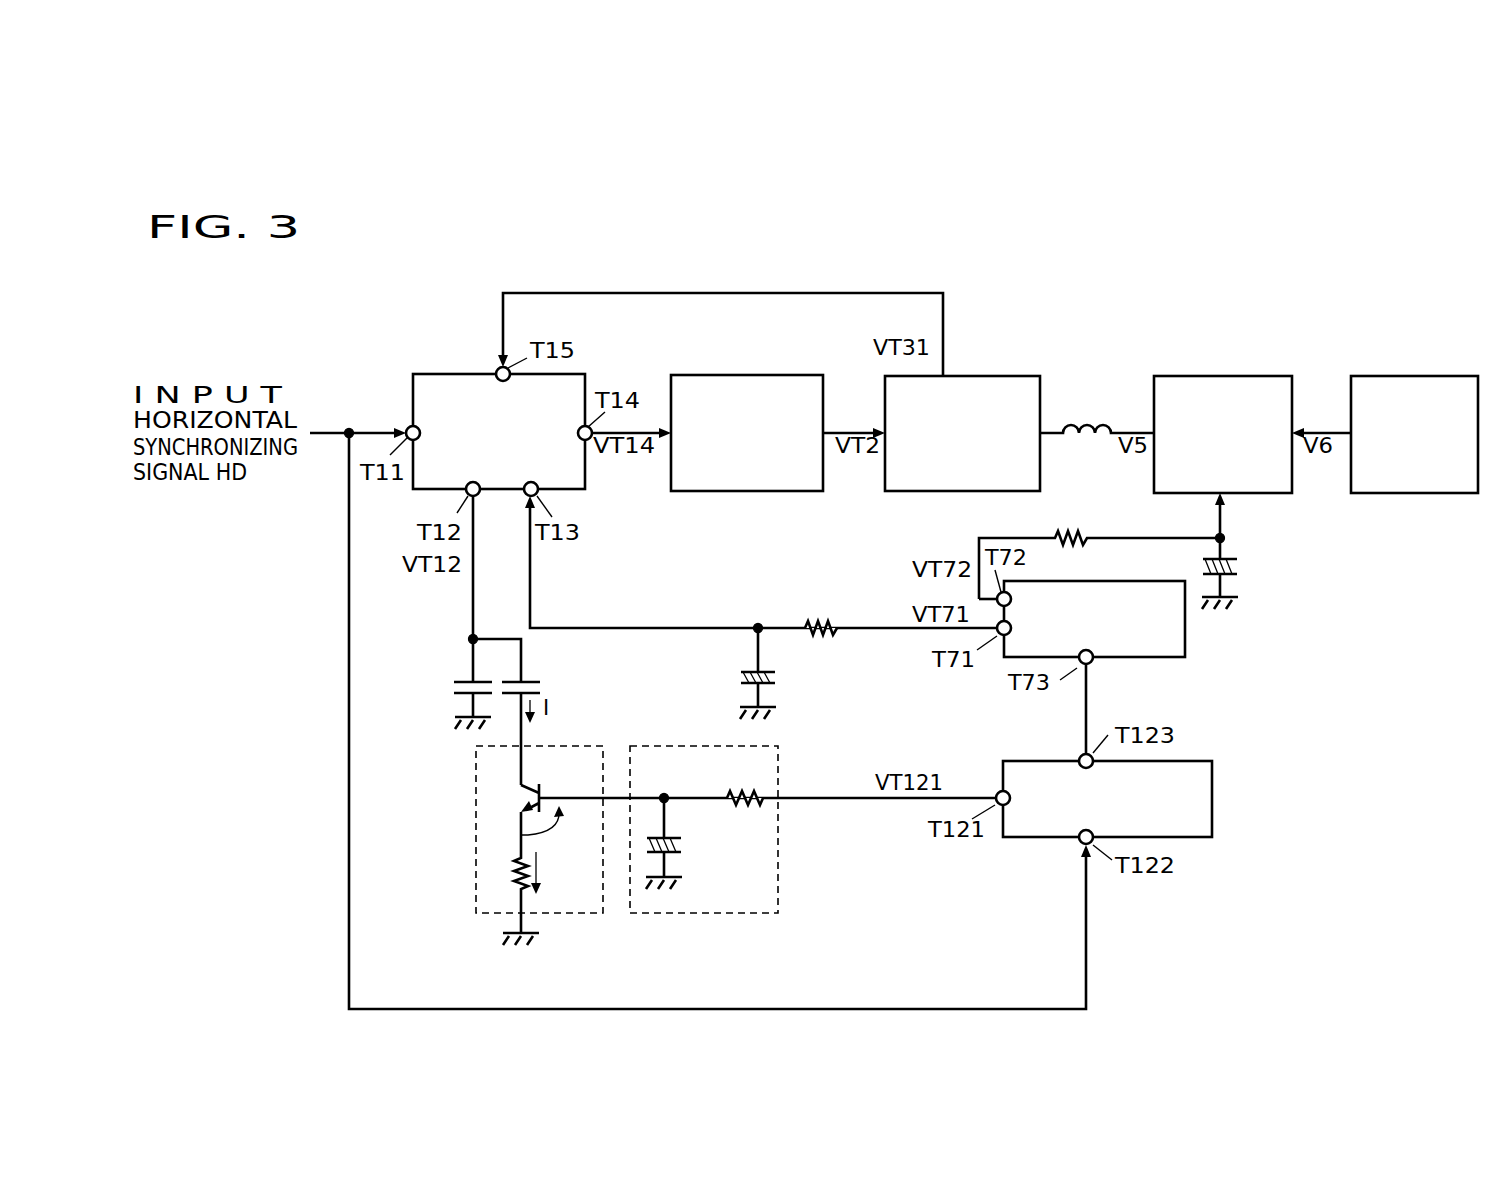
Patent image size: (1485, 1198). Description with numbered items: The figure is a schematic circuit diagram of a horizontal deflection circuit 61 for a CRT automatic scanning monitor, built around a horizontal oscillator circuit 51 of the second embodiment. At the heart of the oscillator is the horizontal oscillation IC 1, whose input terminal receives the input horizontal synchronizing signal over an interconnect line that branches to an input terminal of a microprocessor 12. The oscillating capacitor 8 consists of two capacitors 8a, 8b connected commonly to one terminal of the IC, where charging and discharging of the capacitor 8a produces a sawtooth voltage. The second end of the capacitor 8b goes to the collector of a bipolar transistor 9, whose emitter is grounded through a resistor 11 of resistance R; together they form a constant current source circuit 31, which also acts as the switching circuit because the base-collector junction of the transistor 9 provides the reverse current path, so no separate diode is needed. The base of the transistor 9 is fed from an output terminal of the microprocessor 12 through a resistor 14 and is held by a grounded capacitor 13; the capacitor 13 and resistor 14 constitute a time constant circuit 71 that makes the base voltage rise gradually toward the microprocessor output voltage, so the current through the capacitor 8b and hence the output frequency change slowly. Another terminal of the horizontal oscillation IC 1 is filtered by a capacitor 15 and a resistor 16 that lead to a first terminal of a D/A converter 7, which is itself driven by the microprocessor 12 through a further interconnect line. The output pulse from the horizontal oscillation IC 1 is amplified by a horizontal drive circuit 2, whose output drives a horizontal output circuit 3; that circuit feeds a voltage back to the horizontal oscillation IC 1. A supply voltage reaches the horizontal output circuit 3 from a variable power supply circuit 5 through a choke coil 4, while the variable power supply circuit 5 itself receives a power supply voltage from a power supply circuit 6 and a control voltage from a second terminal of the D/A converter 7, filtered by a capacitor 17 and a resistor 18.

The horizontal oscillation IC 1 is at (465, 372).
The horizontal drive circuit 2 is at (732, 373).
The horizontal output circuit 3 is at (1018, 373).
The choke coil 4 is at (1083, 422).
The variable power supply circuit 5 is at (1222, 372).
The power supply circuit 6 is at (1392, 372).
The D/A converter 7 is at (1187, 636).
The oscillating capacitor 8 is at (447, 642).
The capacitor 8a is at (450, 685).
The capacitor 8b is at (553, 668).
The bipolar transistor 9 is at (542, 787).
The resistor 11 is at (512, 863).
The microprocessor 12 is at (1213, 769).
The capacitor 13 is at (682, 843).
The resistor 14 is at (752, 792).
The capacitor 15 is at (775, 675).
The resistor 16 is at (823, 618).
The capacitor 17 is at (1237, 567).
The resistor 18 is at (1078, 532).
The constant current source circuit 31 is at (547, 913).
The horizontal oscillator circuit 51 is at (405, 354).
The horizontal deflection circuit 61 is at (607, 272).
The time constant circuit 71 is at (703, 913).